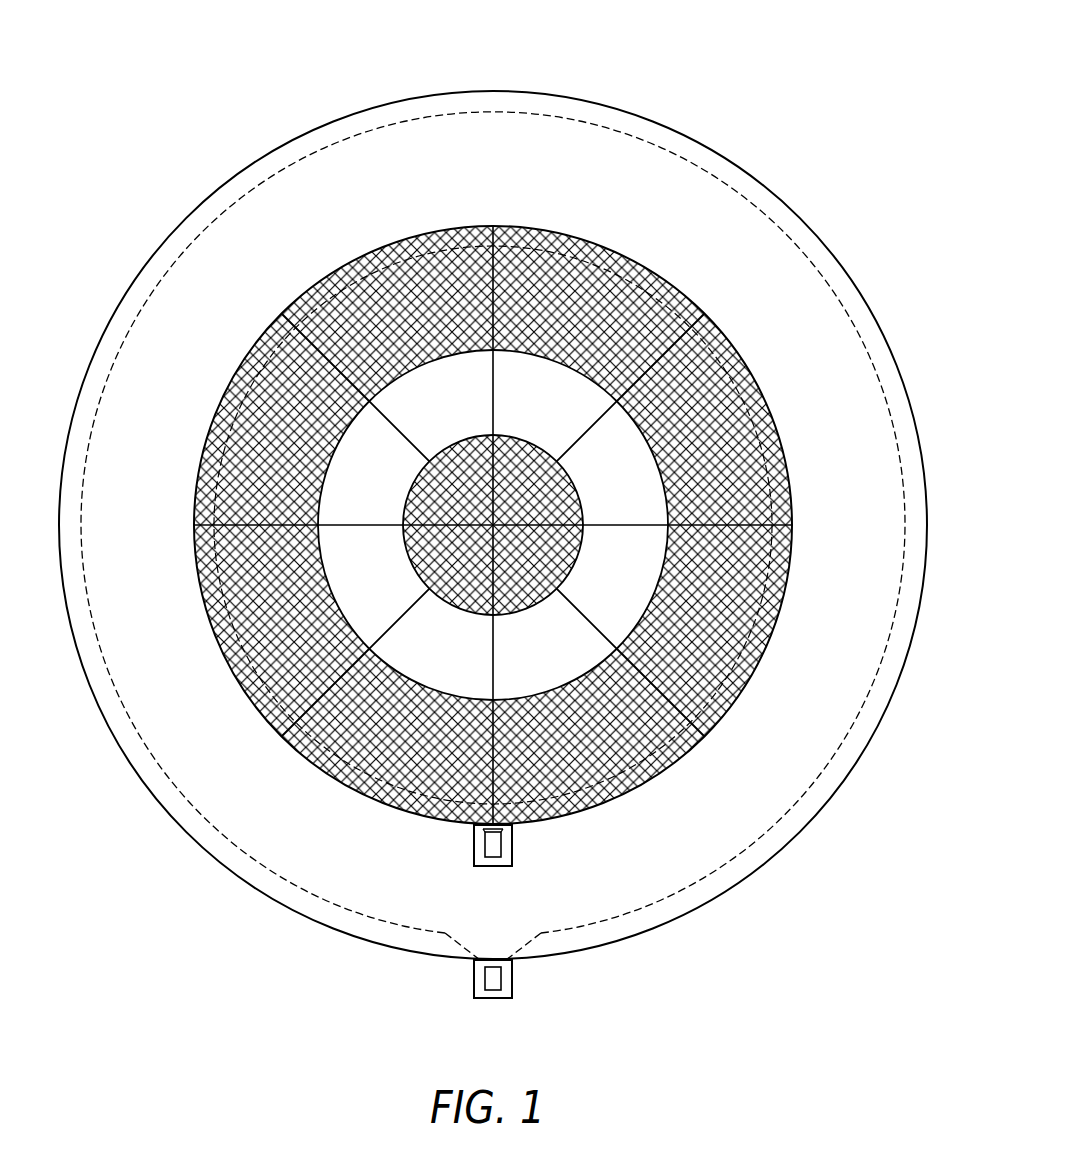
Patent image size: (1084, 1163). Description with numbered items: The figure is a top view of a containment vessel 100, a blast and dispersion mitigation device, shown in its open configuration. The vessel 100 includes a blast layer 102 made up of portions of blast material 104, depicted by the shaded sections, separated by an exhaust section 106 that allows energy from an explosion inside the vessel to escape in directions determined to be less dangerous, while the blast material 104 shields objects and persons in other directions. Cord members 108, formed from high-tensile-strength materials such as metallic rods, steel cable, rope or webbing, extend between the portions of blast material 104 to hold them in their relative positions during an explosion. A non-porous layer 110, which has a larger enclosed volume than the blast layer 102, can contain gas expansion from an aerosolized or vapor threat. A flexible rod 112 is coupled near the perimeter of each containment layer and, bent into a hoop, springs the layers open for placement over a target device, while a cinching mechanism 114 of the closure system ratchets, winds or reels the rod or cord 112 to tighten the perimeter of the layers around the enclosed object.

The containment vessel 100 is at (277, 85).
The blast layer 102 is at (780, 432).
The blast material 104 is at (547, 500).
The exhaust section 106 is at (613, 592).
The cord members 108 is at (228, 524).
The non-porous layer 110 is at (594, 102).
The flexible rod 112 is at (645, 767).
The cinching mechanism 114 is at (523, 848).